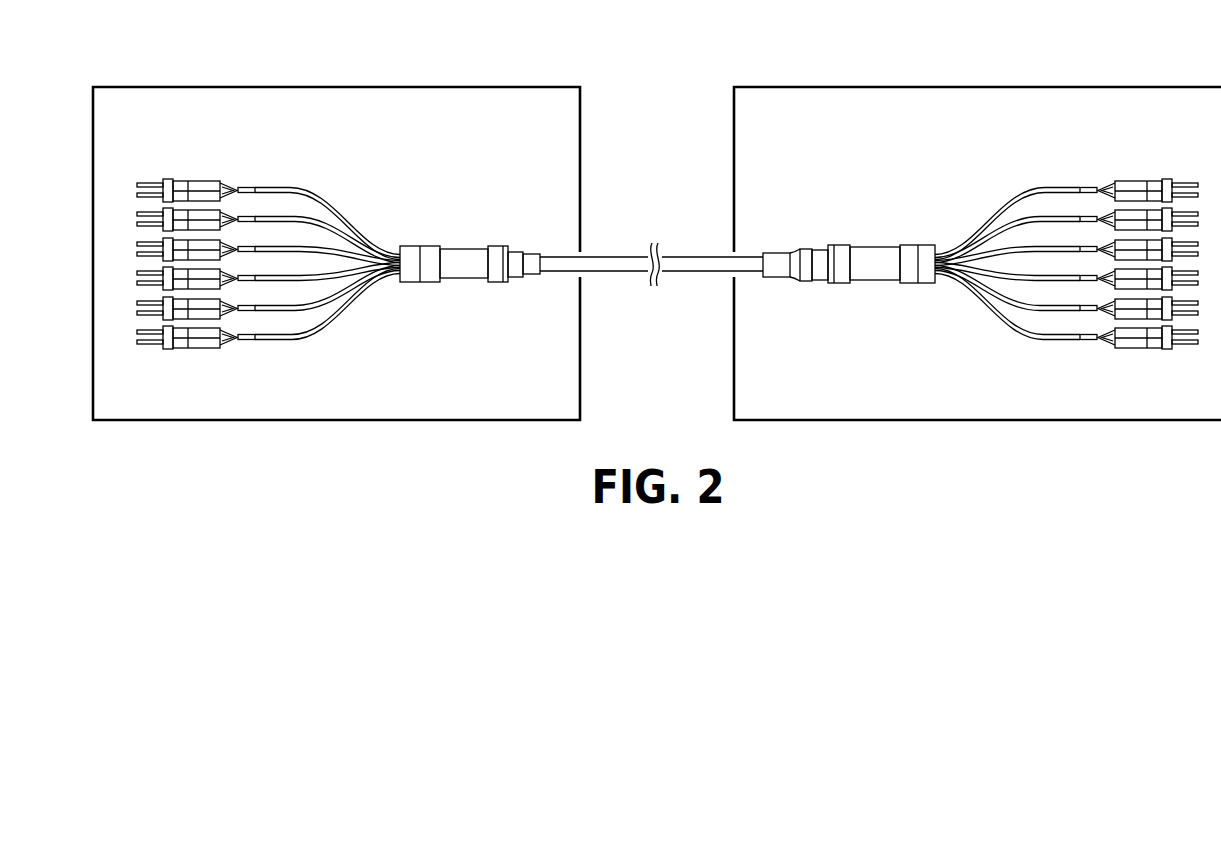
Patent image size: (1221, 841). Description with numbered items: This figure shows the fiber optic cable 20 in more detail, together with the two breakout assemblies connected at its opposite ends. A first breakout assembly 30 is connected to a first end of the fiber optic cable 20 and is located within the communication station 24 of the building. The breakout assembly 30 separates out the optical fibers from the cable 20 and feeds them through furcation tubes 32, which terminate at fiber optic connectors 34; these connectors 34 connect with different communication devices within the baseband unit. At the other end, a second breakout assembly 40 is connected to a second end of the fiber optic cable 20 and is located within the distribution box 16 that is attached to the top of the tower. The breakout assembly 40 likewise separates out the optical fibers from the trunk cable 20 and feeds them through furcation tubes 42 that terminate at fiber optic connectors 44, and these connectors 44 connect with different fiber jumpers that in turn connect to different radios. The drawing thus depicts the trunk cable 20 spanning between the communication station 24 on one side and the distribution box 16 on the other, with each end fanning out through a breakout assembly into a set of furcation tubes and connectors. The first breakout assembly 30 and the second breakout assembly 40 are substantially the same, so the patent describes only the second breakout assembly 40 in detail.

The communication station 24 is at (338, 86).
The distribution box 16 is at (990, 86).
The fiber optic cable 20 is at (695, 256).
The first breakout assembly 30 is at (465, 247).
The furcation tubes 32 is at (283, 341).
The fiber optic connectors 34 is at (179, 348).
The second breakout assembly 40 is at (875, 247).
The furcation tubes 42 is at (1050, 341).
The fiber optic connectors 44 is at (1155, 348).